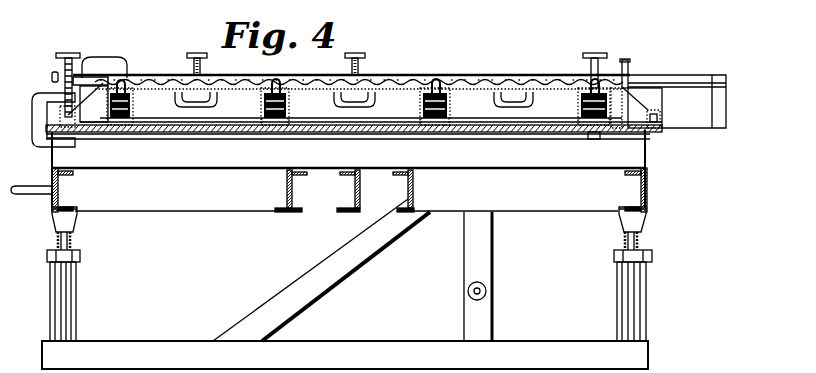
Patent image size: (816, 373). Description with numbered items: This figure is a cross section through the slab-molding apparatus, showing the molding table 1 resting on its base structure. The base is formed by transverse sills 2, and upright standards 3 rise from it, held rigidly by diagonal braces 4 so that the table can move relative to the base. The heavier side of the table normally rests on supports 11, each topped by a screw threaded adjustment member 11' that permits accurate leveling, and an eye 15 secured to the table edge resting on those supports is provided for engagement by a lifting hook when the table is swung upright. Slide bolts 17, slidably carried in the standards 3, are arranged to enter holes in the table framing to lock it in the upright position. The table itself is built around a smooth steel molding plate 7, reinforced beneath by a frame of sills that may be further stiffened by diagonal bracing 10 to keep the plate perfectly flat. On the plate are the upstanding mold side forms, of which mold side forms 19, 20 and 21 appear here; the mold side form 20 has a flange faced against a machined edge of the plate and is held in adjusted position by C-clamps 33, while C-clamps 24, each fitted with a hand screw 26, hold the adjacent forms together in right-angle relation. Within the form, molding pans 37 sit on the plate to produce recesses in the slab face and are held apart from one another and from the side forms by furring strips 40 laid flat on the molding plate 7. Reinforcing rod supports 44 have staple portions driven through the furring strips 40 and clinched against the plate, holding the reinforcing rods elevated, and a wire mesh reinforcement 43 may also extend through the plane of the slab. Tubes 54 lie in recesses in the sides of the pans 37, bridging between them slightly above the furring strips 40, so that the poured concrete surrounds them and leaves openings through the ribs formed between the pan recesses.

The molding table 1 is at (675, 63).
The sills 2 is at (644, 359).
The upright standards 3 is at (489, 253).
The diagonal braces 4 is at (347, 274).
The molding plate 7 is at (596, 135).
The diagonal bracing 10 is at (210, 208).
The supports 11 is at (355, 295).
The screw threaded adjustment member 11' is at (368, 230).
The eye 15 is at (23, 195).
The slide bolts 17 is at (487, 291).
The mold side form 19 is at (640, 104).
The mold side form 20 is at (696, 77).
The mold side form 21 is at (91, 117).
The C-clamps 24 is at (120, 44).
The hand screw 26 is at (54, 74).
The C-clamps 33 is at (34, 107).
The molding pans 37 is at (233, 97).
The furring strips 40 is at (120, 127).
The wire mesh reinforcement 43 is at (299, 77).
The reinforcing rod supports 44 is at (128, 85).
The tubes 54 is at (262, 120).